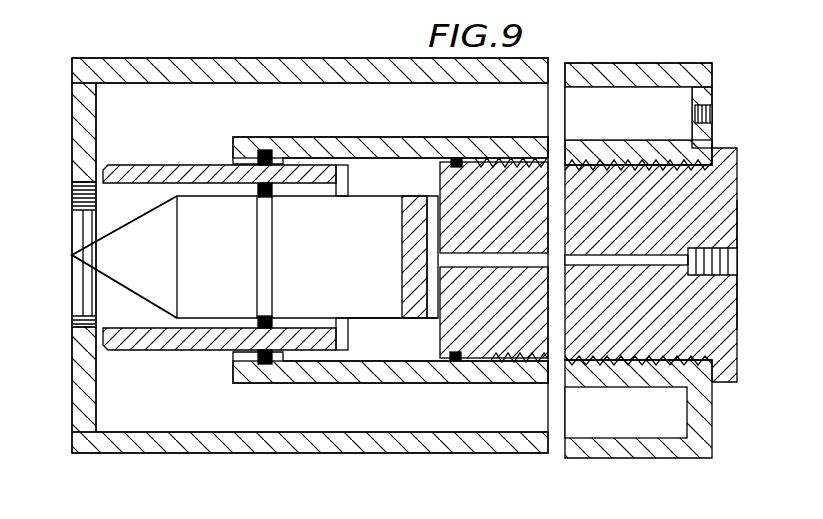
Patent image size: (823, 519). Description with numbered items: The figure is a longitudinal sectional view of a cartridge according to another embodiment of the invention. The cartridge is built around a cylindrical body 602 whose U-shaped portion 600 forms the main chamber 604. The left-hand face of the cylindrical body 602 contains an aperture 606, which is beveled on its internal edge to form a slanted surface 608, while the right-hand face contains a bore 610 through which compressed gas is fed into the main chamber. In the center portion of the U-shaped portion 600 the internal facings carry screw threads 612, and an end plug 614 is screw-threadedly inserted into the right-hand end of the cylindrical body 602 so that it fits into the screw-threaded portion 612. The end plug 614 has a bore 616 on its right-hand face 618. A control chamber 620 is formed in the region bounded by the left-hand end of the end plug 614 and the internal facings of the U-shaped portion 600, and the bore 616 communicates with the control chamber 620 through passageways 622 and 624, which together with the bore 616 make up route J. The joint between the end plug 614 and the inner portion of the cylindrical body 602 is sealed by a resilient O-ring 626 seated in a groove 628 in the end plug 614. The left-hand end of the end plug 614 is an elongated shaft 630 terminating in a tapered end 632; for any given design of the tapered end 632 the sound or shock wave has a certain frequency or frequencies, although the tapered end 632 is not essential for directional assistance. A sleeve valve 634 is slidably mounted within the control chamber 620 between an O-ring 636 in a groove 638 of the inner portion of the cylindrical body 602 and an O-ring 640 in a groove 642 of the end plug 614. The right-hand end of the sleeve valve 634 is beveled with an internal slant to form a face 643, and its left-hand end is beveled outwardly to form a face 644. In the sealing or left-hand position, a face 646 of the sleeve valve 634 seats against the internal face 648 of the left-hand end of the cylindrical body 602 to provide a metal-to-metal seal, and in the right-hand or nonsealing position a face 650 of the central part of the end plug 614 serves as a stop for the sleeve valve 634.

The U-shaped portion 600 is at (590, 142).
The cylindrical body 602 is at (357, 58).
The main chamber 604 is at (393, 113).
The aperture 606 is at (78, 224).
The slanted surface 608 is at (76, 200).
The bore 610 is at (715, 113).
The screw threads 612 is at (600, 388).
The end plug 614 is at (738, 181).
The bore 616 is at (731, 268).
The right-hand face 618 is at (738, 312).
The control chamber 620 is at (412, 175).
The passageway 622 is at (455, 309).
The passageway 624 is at (448, 347).
The resilient O-ring 626 is at (457, 158).
The groove 628 is at (474, 162).
The elongated shaft 630 is at (182, 292).
The tapered end 632 is at (78, 262).
The sleeve valve 634 is at (172, 352).
The O-ring 636 is at (266, 150).
The groove 638 is at (274, 152).
The O-ring 640 is at (258, 317).
The groove 642 is at (273, 316).
The face 643 is at (350, 170).
The face 644 is at (103, 346).
The face 646 is at (80, 334).
The internal face 648 is at (78, 166).
The face 650 is at (378, 385).